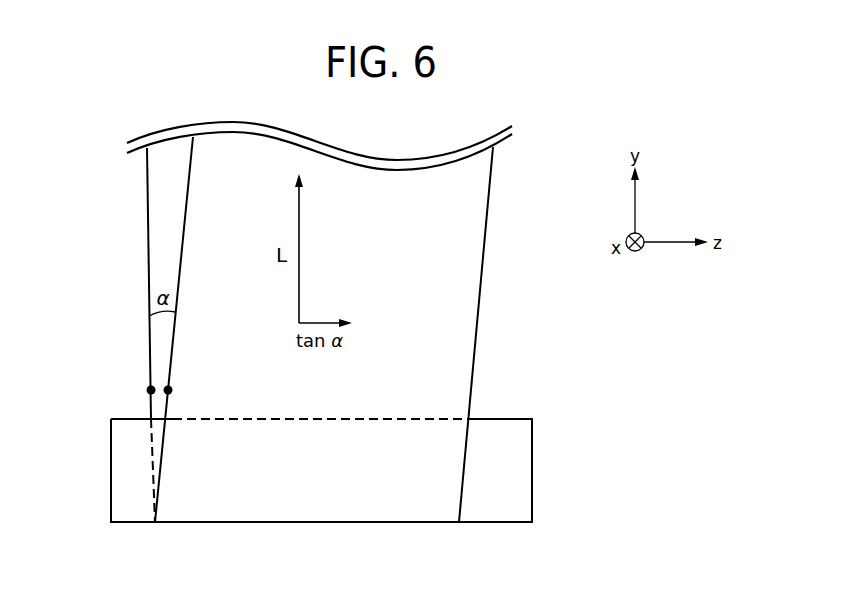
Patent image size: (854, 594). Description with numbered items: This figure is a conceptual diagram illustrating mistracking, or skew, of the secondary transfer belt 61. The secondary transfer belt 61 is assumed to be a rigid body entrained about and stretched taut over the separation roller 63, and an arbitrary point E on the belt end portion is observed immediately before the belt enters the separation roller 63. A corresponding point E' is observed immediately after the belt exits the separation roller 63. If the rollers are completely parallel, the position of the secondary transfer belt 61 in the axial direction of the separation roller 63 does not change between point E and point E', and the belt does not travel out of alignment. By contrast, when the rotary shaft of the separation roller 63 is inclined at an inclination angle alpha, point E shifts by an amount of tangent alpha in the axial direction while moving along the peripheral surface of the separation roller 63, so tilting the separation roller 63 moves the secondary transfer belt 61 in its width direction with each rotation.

The secondary transfer belt 61 is at (465, 313).
The separation roller 63 is at (111, 467).
The point E is at (121, 335).
The point E' is at (187, 329).